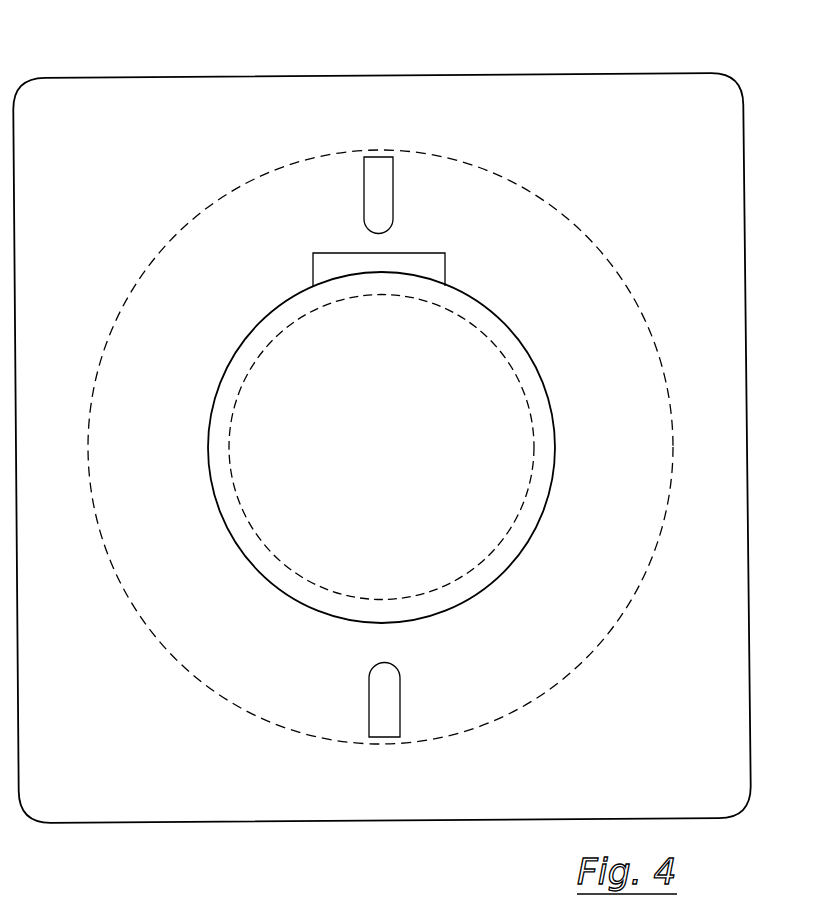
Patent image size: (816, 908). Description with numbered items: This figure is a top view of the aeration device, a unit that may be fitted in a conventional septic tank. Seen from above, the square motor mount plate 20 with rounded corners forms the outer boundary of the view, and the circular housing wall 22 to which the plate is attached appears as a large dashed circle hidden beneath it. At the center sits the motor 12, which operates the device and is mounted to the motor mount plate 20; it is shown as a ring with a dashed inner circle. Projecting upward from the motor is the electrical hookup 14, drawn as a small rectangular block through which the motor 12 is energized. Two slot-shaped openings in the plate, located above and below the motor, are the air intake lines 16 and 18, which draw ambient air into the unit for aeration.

The motor 12 is at (523, 343).
The electrical hookup 14 is at (340, 252).
The air intake line 16 is at (375, 168).
The air intake line 18 is at (382, 725).
The motor mount plate 20 is at (143, 77).
The circular housing wall 22 is at (593, 242).